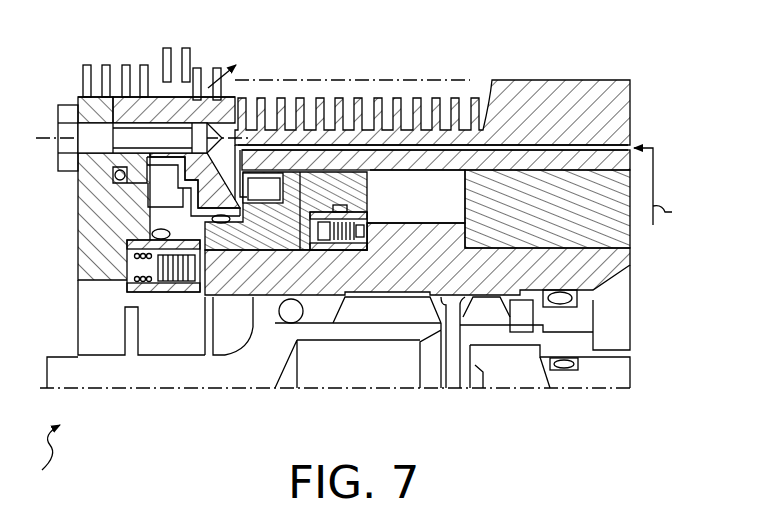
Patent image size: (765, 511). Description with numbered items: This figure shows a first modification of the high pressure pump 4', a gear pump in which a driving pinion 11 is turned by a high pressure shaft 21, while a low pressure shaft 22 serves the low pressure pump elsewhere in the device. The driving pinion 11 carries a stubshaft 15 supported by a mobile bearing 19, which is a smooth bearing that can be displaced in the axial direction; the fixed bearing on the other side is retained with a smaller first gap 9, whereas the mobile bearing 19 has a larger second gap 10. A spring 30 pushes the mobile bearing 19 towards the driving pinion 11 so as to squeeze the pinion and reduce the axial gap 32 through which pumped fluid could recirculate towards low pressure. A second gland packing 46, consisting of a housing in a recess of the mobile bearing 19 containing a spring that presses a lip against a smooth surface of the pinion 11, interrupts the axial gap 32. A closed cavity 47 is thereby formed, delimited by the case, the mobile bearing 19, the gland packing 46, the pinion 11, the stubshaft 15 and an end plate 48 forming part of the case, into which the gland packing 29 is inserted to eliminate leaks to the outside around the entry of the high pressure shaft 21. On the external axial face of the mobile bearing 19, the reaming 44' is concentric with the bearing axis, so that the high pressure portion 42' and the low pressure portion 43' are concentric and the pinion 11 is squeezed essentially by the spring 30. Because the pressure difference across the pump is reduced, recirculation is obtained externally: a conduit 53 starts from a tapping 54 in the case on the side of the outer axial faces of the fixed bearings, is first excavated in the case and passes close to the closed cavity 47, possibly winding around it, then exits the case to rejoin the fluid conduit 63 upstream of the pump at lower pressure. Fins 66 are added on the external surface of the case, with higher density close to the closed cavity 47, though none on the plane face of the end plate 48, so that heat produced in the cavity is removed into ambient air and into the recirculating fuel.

The high pressure pump 4' is at (45, 458).
The first gap 9 is at (595, 248).
The second gap 10 is at (300, 252).
The driving pinion 11 is at (433, 185).
The stubshaft 15 is at (224, 272).
The mobile bearing 19 is at (266, 233).
The high pressure shaft 21 is at (153, 378).
The low pressure shaft 22 is at (573, 380).
The gland packing 29 is at (146, 354).
The spring 30 is at (267, 185).
The axial gap 32 is at (386, 142).
The high pressure portion 42' is at (245, 108).
The low pressure portion 43' is at (132, 253).
The concentric reaming 44' is at (176, 120).
The second gland packing 46 is at (314, 207).
The closed cavity 47 is at (170, 198).
The end plate 48 is at (132, 222).
The conduit 53 is at (540, 150).
The tapping 54 is at (667, 187).
The fluid conduit 63 is at (232, 205).
The fins 66 is at (101, 68).